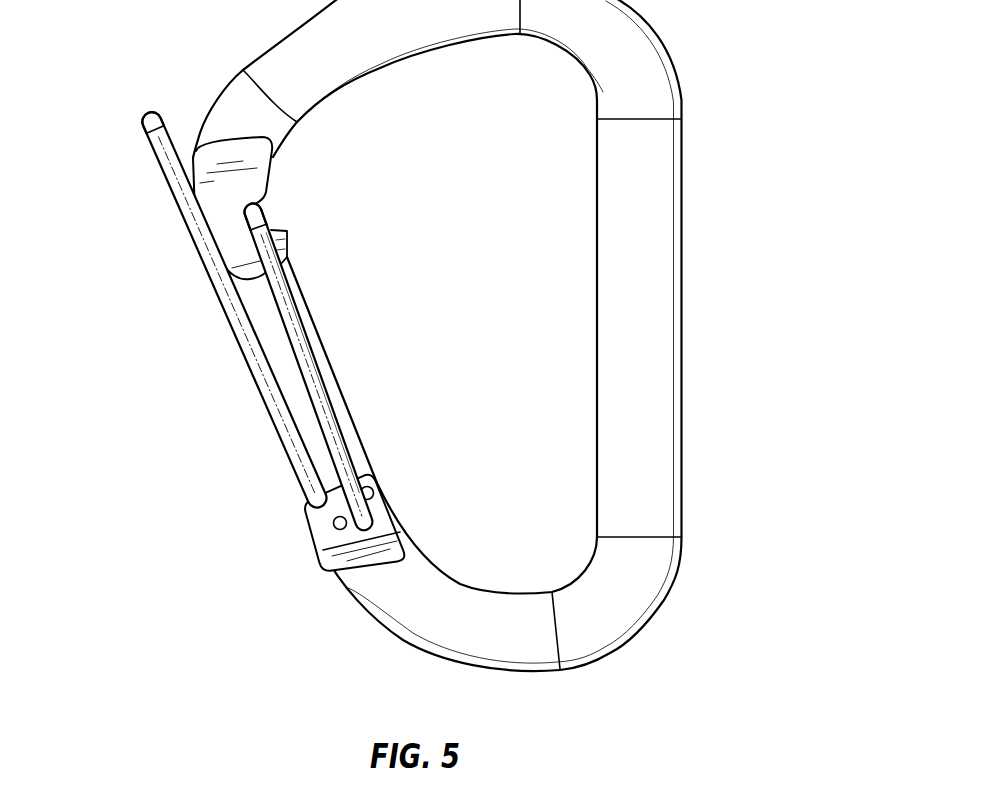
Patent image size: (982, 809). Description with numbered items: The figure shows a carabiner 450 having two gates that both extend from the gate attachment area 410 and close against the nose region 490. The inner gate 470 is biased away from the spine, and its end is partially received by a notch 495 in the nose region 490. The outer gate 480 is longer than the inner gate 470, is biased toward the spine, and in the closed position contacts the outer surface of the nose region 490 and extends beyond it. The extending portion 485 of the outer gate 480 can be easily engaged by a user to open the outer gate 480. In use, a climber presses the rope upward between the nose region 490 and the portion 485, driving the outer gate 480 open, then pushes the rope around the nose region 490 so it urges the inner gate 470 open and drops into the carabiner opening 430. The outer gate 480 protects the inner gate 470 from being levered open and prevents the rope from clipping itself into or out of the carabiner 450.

The gate attachment area 410 is at (311, 583).
The carabiner opening 430 is at (540, 318).
The carabiner 450 is at (716, 189).
The inner gate 470 is at (303, 358).
The outer gate 480 is at (254, 363).
The portion of the outer gate 485 is at (135, 143).
The nose region 490 is at (277, 173).
The notch 495 is at (281, 218).